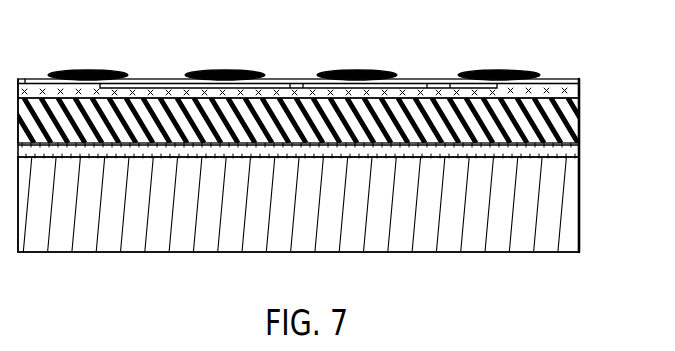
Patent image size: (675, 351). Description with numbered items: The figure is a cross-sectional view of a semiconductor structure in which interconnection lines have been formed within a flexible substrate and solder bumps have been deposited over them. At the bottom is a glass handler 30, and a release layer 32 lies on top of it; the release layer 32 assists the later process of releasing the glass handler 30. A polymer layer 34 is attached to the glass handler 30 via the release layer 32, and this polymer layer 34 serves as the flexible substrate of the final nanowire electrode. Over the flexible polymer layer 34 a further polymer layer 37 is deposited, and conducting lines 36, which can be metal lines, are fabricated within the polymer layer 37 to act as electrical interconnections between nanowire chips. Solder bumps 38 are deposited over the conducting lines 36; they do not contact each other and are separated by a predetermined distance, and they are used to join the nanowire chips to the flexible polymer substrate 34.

The glass handler 30 is at (580, 188).
The release layer 32 is at (580, 141).
The polymer layer 34 is at (580, 98).
The conducting lines 36 is at (553, 79).
The polymer layer 37 is at (580, 83).
The solder bumps 38 is at (353, 71).